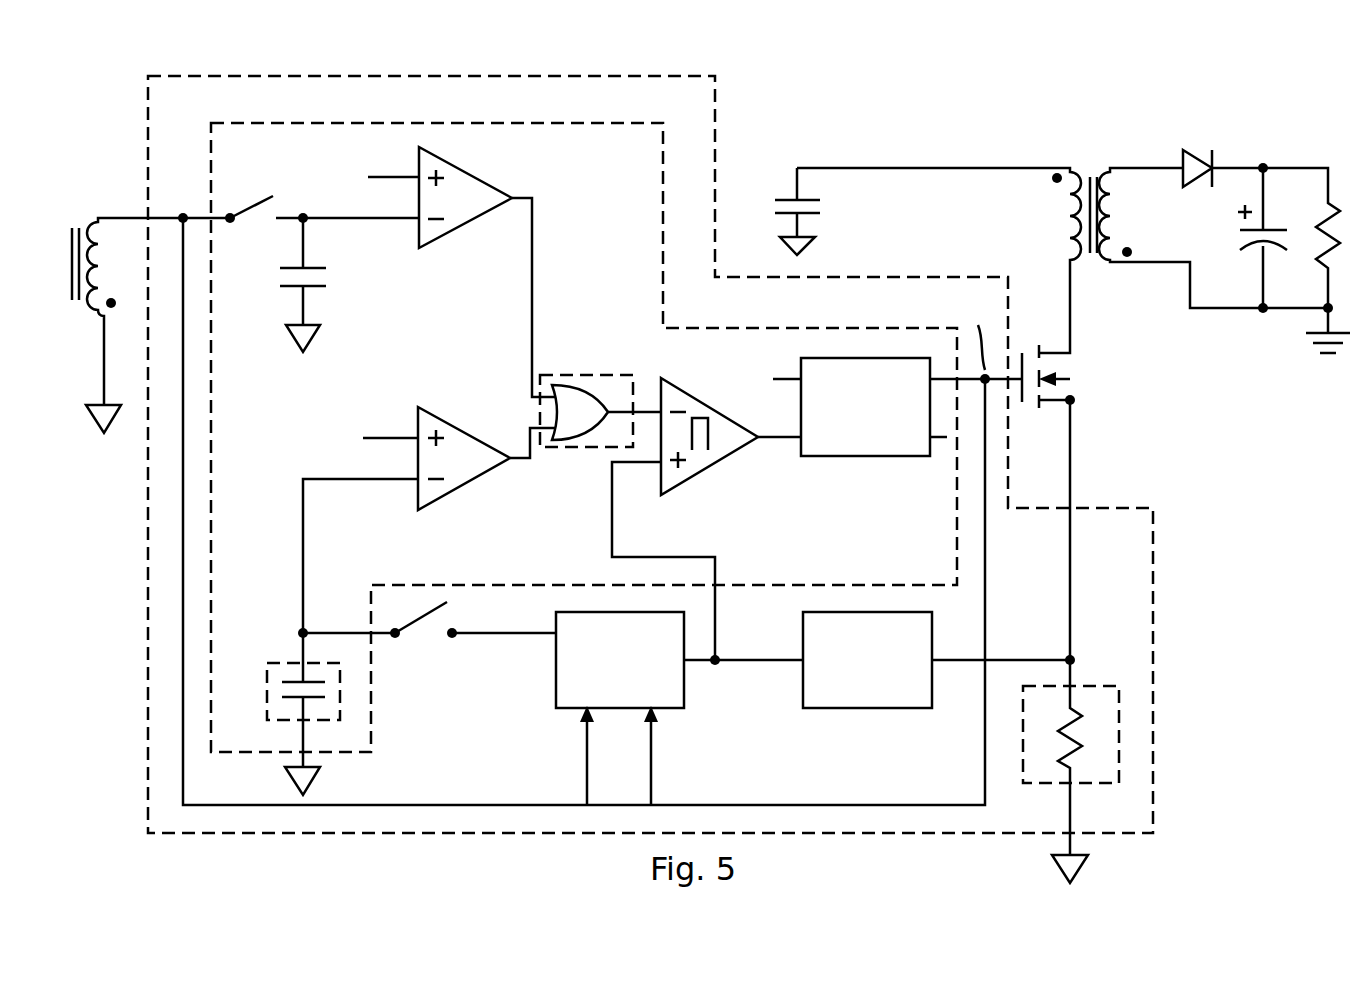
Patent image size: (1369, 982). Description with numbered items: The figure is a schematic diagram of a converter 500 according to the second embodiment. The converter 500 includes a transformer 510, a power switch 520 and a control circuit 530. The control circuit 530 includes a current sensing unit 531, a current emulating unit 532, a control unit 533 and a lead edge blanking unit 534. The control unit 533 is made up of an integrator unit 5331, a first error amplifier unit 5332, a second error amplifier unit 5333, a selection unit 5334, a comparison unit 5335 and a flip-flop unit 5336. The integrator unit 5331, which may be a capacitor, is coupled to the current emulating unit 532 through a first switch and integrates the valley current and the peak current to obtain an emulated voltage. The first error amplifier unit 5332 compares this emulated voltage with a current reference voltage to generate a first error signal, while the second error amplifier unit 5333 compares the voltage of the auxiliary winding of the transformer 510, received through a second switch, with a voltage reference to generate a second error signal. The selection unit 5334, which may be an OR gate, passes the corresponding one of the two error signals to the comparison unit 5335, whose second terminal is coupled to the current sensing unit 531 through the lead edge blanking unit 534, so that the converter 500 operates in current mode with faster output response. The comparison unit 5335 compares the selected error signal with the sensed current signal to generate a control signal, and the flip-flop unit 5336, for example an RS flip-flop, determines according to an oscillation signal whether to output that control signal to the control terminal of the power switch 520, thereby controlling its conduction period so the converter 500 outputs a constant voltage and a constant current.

The converter 500 is at (108, 65).
The transformer 510 is at (1090, 170).
The power switch 520 is at (1072, 372).
The control circuit 530 is at (1153, 631).
The current sensing unit 531 is at (1119, 752).
The current emulating unit 532 is at (598, 675).
The control unit 533 is at (957, 527).
The lead edge blanking unit 534 is at (845, 675).
The integrator unit 5331 is at (340, 700).
The first error amplifier unit 5332 is at (448, 497).
The second error amplifier unit 5333 is at (443, 240).
The selection unit 5334 is at (575, 373).
The comparison unit 5335 is at (708, 467).
The flip-flop unit 5336 is at (867, 456).